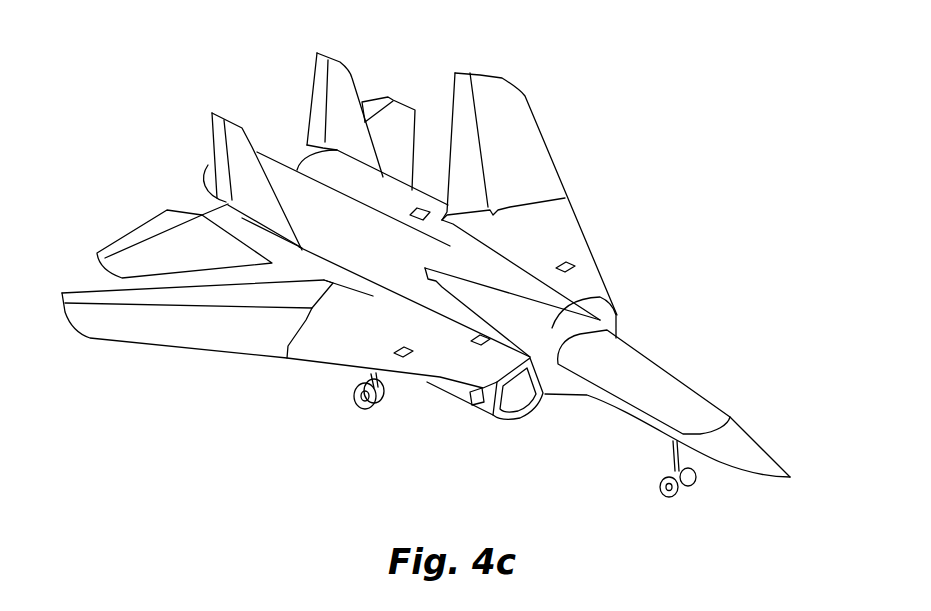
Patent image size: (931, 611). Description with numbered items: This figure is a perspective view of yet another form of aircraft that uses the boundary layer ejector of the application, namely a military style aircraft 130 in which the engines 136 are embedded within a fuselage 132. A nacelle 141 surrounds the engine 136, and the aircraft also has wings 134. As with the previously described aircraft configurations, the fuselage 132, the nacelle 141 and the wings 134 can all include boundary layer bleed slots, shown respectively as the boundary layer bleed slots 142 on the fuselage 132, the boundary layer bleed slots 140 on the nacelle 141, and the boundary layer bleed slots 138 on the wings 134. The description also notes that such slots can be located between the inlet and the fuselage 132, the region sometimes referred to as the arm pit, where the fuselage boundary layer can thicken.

The military style aircraft 130 is at (655, 199).
The fuselage 132 is at (618, 300).
The wings 134 is at (523, 147).
The engines 136 is at (549, 433).
The boundary layer bleed slots 138 is at (568, 260).
The boundary layer bleed slots 140 is at (470, 403).
The nacelle 141 is at (168, 143).
The boundary layer bleed slots 142 is at (420, 207).